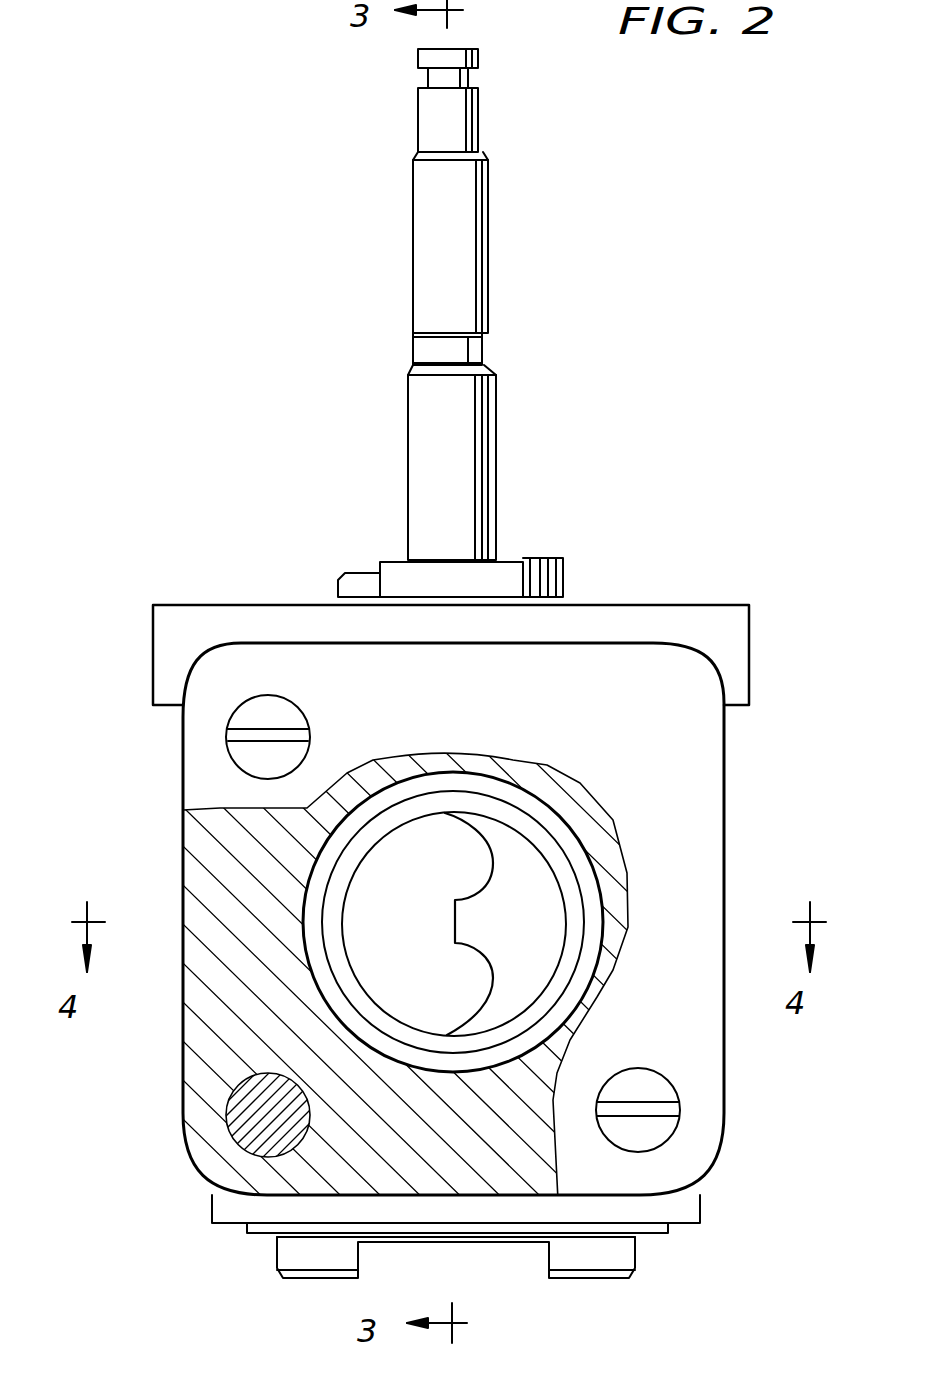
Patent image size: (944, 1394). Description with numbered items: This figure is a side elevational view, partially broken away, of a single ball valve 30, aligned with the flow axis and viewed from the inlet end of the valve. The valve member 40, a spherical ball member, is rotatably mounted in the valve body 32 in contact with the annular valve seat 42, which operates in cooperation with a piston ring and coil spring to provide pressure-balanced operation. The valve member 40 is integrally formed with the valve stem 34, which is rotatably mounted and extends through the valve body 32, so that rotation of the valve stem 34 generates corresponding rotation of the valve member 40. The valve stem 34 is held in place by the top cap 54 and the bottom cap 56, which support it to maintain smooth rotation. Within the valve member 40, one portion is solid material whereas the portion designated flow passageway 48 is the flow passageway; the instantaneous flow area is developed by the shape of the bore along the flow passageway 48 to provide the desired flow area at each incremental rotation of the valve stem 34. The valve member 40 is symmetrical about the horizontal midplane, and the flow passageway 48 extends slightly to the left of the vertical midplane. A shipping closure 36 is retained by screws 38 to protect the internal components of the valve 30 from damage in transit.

The ball valve 30 is at (700, 550).
The valve body 32 is at (750, 603).
The valve stem 34 is at (412, 228).
The shipping closure 36 is at (725, 800).
The screws 38 is at (277, 697).
The valve member 40 is at (382, 864).
The annular valve seat 42 is at (480, 805).
The flow passageway 48 is at (527, 880).
The top cap 54 is at (372, 560).
The bottom cap 56 is at (277, 1268).